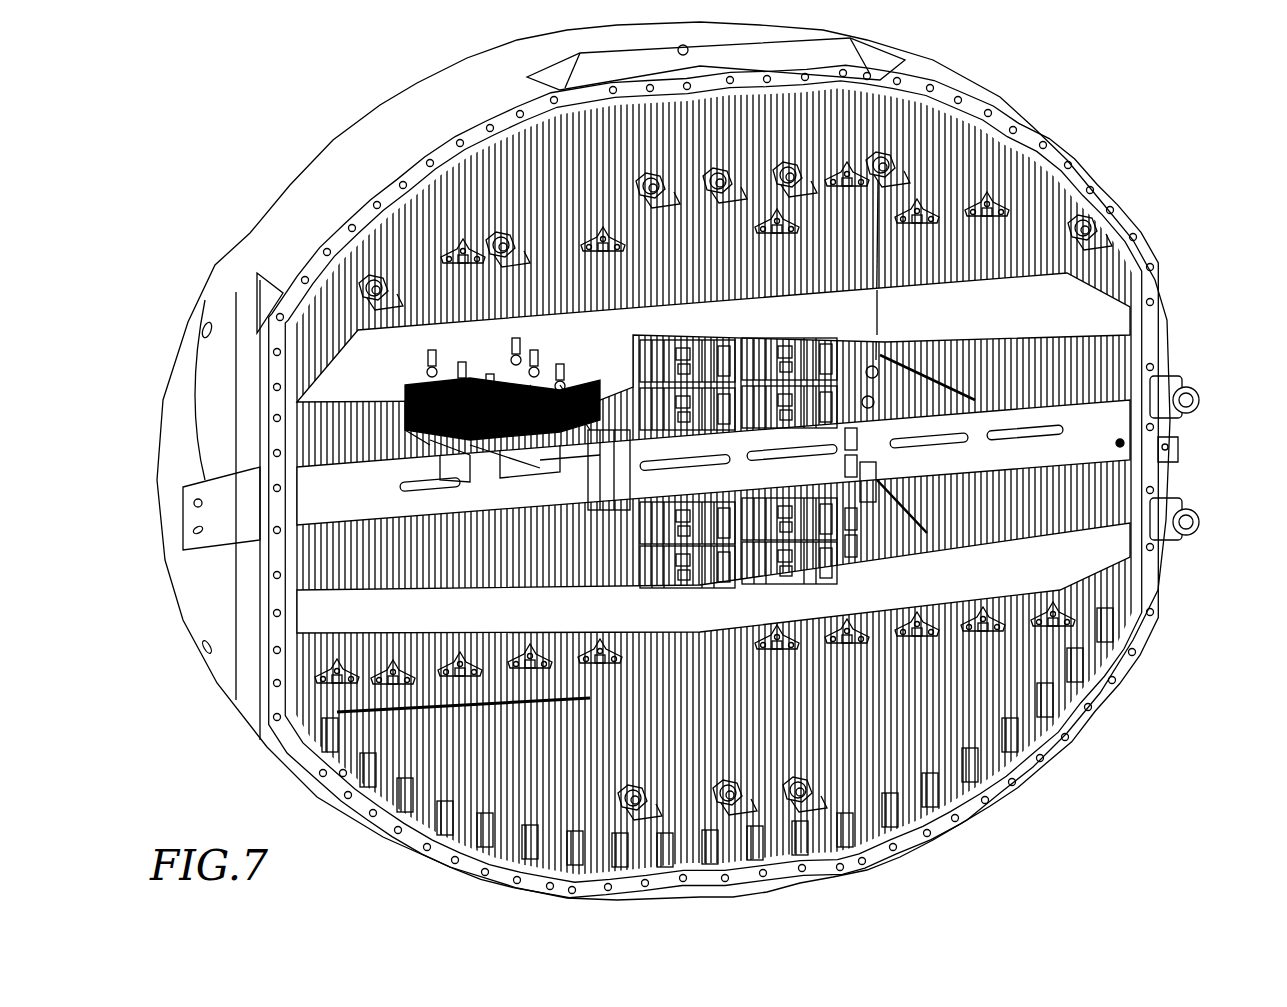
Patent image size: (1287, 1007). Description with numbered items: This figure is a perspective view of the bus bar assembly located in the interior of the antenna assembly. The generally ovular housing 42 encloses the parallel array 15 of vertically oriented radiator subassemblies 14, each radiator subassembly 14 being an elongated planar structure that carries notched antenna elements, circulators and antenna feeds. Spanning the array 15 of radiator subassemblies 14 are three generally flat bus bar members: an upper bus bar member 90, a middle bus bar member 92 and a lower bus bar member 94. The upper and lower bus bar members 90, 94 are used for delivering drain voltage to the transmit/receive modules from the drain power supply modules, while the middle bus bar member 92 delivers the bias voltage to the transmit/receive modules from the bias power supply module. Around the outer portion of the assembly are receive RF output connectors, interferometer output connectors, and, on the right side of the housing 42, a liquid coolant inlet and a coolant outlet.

The radiator subassembly 14 is at (487, 150).
The array 15 is at (1076, 146).
The housing 42 is at (350, 152).
The upper bus bar member 90 is at (1112, 316).
The middle bus bar member 92 is at (1118, 443).
The lower bus bar member 94 is at (1100, 543).